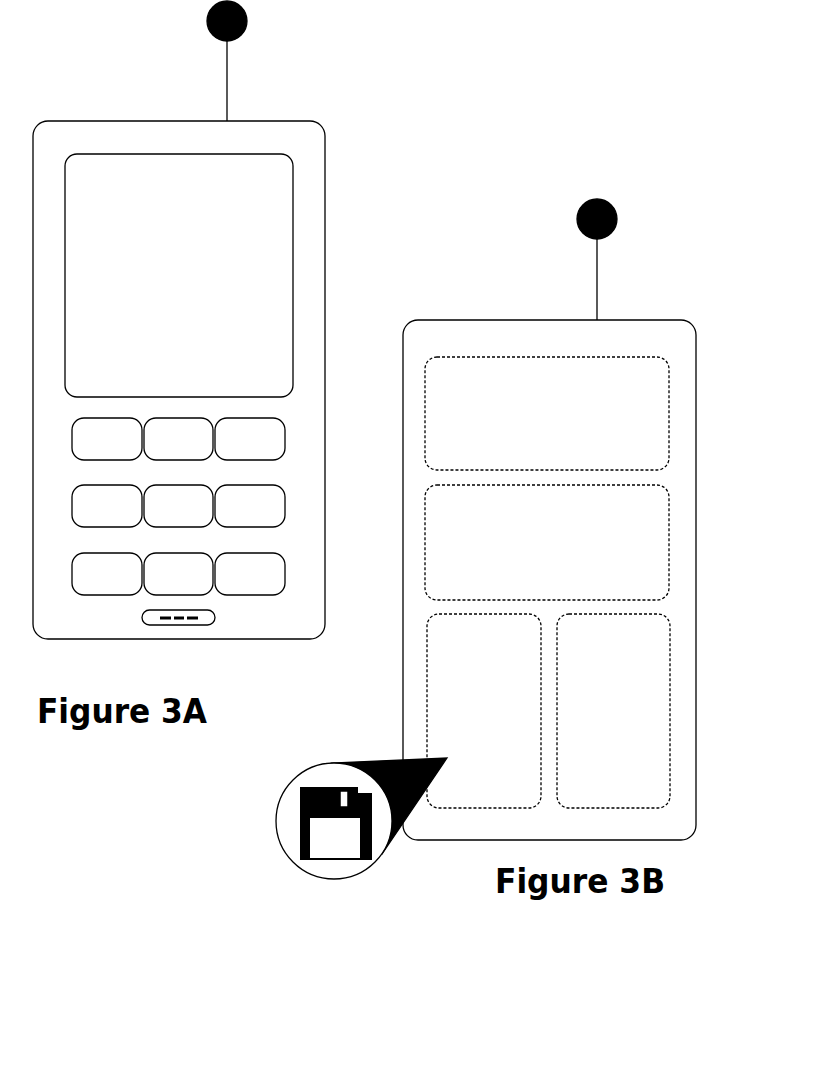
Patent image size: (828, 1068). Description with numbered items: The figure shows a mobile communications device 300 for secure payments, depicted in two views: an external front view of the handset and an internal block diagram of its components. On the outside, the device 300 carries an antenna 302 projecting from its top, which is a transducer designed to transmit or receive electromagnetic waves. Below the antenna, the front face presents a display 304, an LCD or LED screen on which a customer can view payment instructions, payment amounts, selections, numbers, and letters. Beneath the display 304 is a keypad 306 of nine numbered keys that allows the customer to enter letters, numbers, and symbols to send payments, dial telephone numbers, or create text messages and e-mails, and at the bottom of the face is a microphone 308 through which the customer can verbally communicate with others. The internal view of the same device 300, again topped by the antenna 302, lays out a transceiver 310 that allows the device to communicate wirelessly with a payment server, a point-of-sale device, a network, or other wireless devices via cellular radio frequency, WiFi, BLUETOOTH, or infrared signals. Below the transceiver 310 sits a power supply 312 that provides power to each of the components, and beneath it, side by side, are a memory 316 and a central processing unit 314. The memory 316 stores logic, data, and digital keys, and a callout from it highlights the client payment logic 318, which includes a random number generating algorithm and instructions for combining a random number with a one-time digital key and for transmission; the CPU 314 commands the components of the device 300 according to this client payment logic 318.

In FIG. 3A, the mobile communications device 300 is at (179, 349).
In FIG. 3B, the mobile communications device 300 is at (549, 536).
In FIG. 3A, the antenna 302 is at (308, 61).
In FIG. 3B, the antenna 302 is at (597, 259).
In FIG. 3A, the display 304 is at (248, 257).
In FIG. 3A, the keypad 306 is at (178, 474).
In FIG. 3A, the microphone 308 is at (126, 648).
In FIG. 3B, the transceiver 310 is at (503, 381).
In FIG. 3B, the power supply 312 is at (591, 511).
In FIG. 3B, the central processing unit (CPU) 314 is at (657, 681).
In FIG. 3B, the memory 316 is at (439, 680).
In FIG. 3B, the client payment logic 318 is at (302, 818).